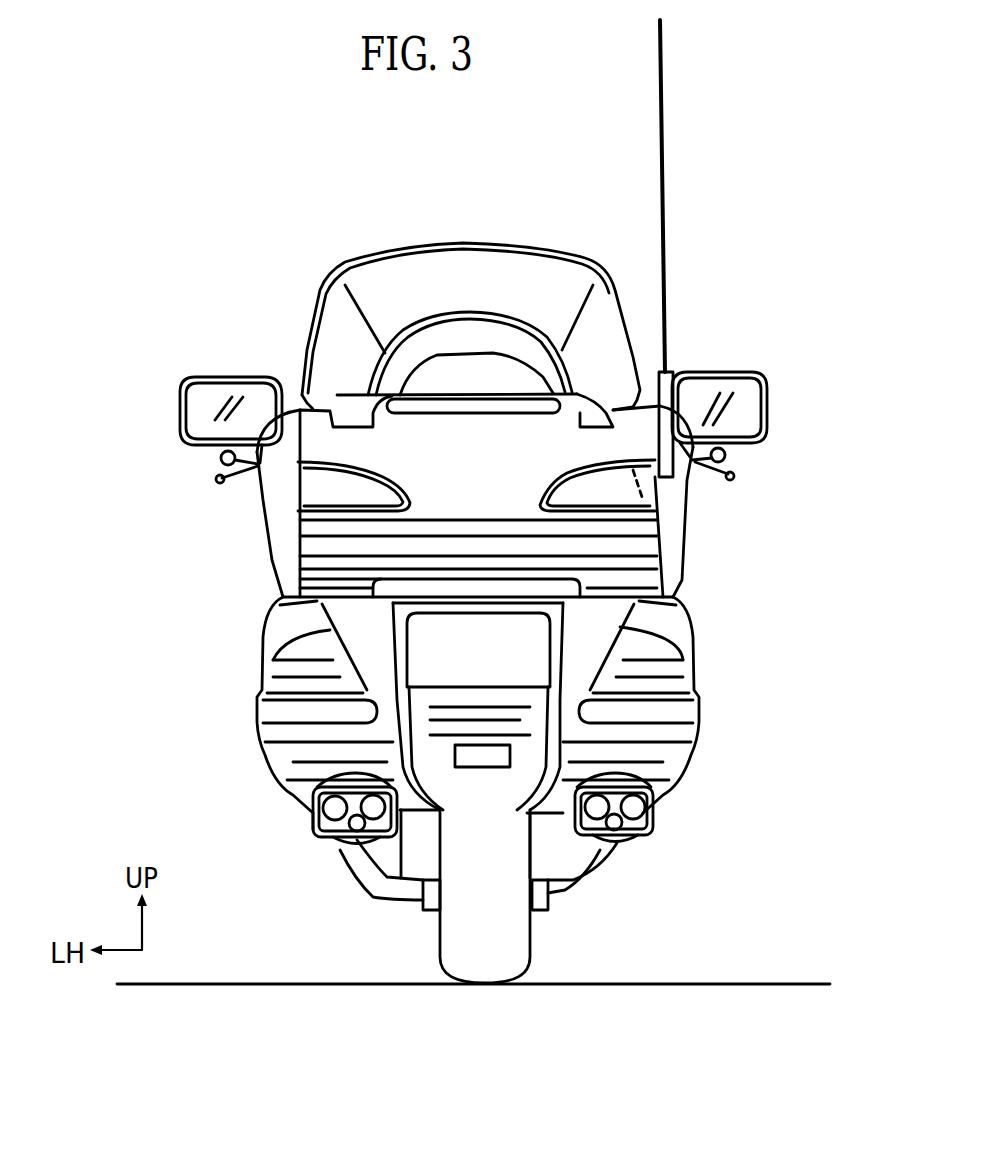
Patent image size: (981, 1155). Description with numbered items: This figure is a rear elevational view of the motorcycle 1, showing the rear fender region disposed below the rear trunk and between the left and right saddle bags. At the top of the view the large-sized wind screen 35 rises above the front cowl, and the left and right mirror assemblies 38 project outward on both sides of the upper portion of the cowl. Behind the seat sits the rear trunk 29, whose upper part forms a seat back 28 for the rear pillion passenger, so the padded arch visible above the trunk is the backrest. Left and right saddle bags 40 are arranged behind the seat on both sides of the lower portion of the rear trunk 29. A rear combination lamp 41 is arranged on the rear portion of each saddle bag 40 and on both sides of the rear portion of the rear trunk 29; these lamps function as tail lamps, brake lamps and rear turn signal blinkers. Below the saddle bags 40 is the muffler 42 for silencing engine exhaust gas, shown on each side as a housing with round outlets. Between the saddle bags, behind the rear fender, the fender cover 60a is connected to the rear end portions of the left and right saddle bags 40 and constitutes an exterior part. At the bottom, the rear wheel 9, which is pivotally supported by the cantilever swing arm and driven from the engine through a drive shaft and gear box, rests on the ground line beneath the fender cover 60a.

The motorcycle 1 is at (184, 283).
The rear wheel 9 is at (450, 943).
The seat back 28 is at (463, 317).
The rear trunk 29 is at (489, 441).
The wind screen 35 is at (363, 257).
The mirror assemblies 38 is at (190, 383).
The saddle bags 40 is at (262, 626).
The rear combination lamp 41 is at (317, 492).
The muffler 42 is at (315, 830).
The fender cover 60a is at (540, 720).